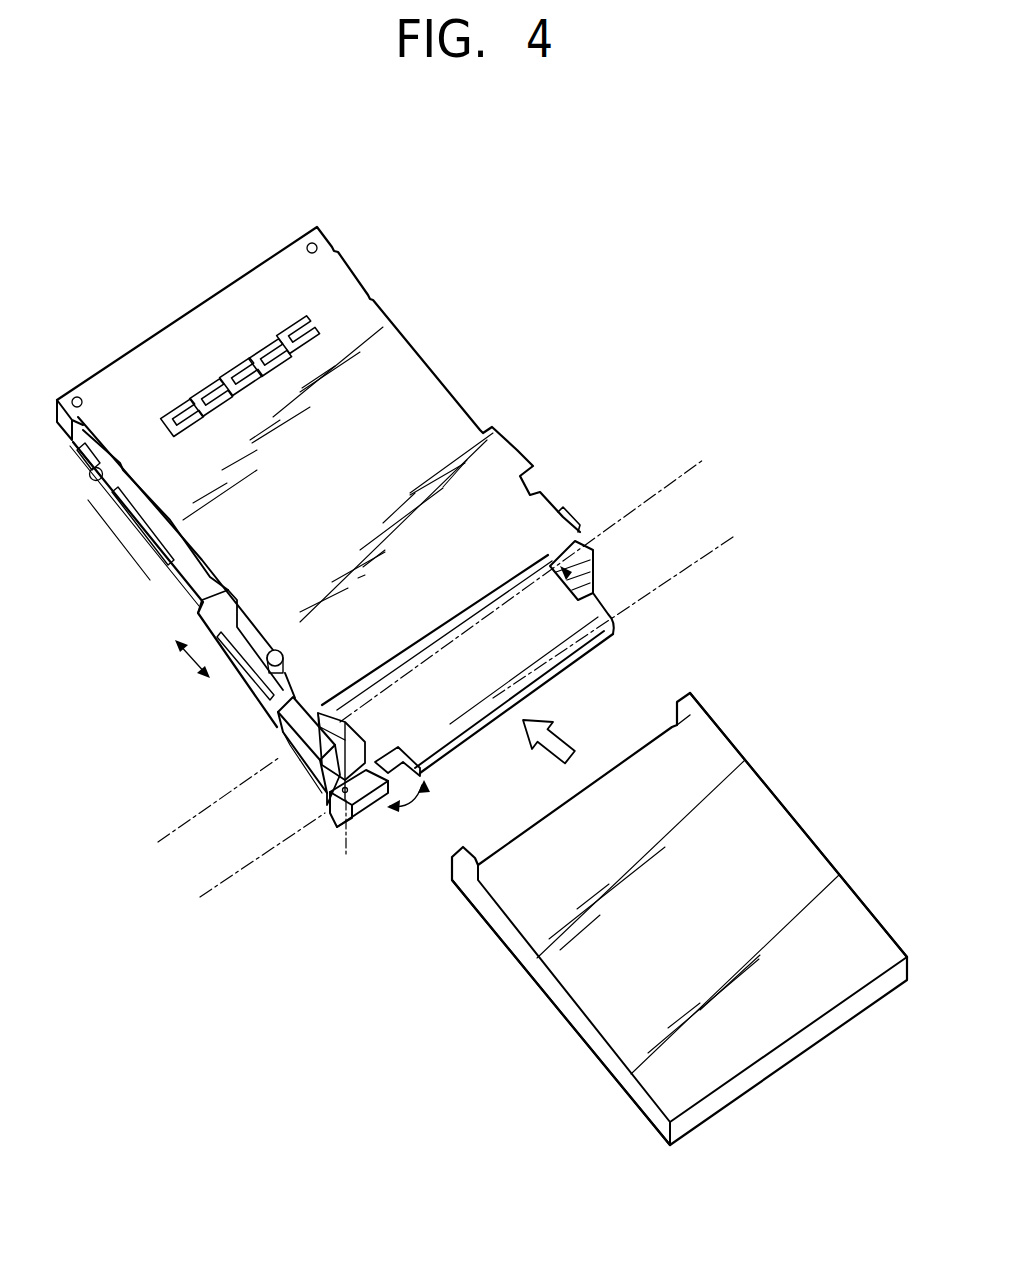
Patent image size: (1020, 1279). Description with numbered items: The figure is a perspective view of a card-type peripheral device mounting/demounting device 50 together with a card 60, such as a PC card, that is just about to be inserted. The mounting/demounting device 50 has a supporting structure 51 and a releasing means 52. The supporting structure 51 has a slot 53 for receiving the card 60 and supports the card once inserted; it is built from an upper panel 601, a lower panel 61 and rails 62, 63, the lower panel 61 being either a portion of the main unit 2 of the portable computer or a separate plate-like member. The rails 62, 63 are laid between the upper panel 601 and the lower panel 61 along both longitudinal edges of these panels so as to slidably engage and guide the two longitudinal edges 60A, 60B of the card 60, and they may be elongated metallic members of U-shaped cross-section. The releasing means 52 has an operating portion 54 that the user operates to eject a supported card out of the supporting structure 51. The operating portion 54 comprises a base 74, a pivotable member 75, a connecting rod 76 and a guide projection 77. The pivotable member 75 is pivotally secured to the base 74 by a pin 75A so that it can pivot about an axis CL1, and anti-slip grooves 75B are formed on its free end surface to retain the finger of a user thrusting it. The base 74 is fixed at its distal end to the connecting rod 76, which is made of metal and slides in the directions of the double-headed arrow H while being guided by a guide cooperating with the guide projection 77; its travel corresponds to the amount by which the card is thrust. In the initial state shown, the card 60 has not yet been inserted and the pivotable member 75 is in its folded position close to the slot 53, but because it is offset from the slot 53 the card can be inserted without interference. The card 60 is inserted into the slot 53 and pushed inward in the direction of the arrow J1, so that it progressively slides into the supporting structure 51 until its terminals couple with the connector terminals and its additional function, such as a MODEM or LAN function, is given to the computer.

The card-type peripheral device mounting/demounting device 50 is at (402, 256).
The supporting structure 51 is at (411, 408).
The upper panel 601 is at (497, 462).
The rail 63 is at (593, 573).
The main unit 2 is at (703, 530).
The lower panel 61 is at (583, 617).
The slot 53 is at (516, 626).
The guide projection 77 is at (142, 553).
The connecting rod 76 is at (193, 593).
The double-headed arrow H is at (187, 660).
The base 74 is at (288, 732).
The operating portion 54 is at (274, 743).
The releasing means 52 is at (290, 785).
The pivotable member 75 is at (330, 822).
The axis CL1 is at (347, 858).
The pin 75A is at (350, 793).
The anti-slip grooves 75B is at (383, 763).
The rail 62 is at (353, 722).
The arrow J1 is at (560, 740).
The card 60 is at (761, 1021).
The longitudinal edge 60B is at (789, 809).
The longitudinal edge 60A is at (549, 991).